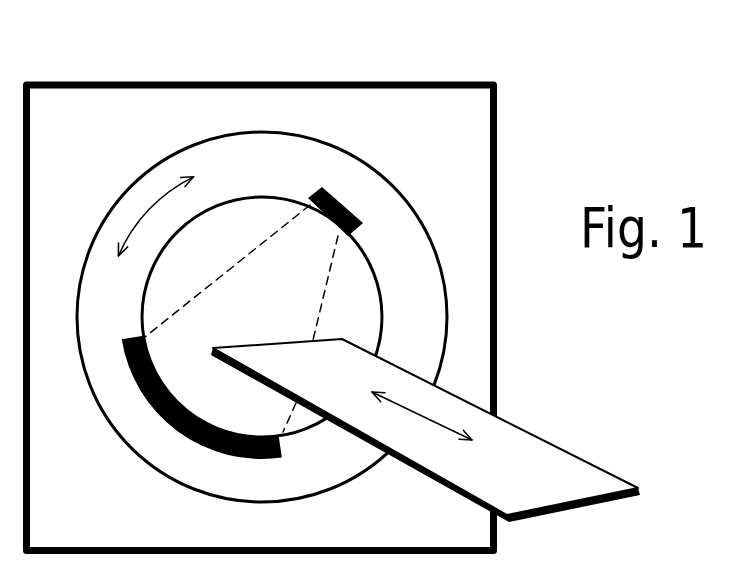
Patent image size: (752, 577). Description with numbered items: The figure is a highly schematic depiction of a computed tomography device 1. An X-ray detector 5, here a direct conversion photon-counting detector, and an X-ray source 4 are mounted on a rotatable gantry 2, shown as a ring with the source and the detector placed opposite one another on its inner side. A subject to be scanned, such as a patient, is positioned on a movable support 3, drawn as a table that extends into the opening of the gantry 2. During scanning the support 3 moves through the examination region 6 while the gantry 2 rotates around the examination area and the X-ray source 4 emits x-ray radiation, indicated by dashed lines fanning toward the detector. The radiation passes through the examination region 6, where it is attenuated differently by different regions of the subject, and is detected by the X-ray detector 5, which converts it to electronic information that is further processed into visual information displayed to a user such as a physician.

The computed tomography device 1 is at (547, 64).
The rotatable gantry 2 is at (427, 302).
The movable support 3 is at (525, 452).
The X-ray source 4 is at (343, 197).
The X-ray detector 5 is at (168, 425).
The examination region 6 is at (270, 272).